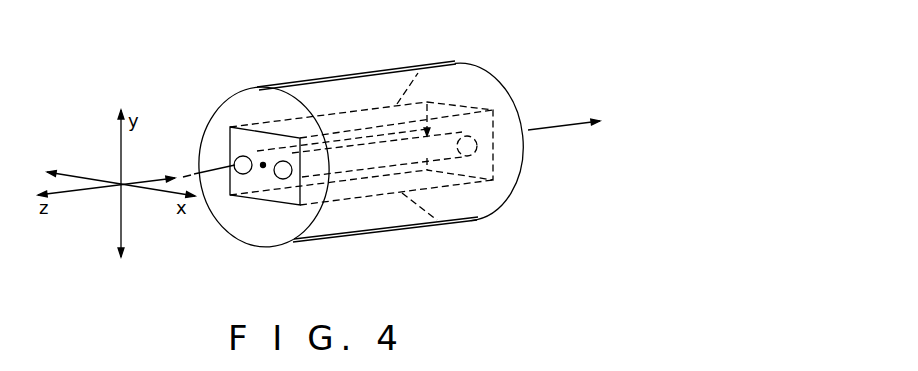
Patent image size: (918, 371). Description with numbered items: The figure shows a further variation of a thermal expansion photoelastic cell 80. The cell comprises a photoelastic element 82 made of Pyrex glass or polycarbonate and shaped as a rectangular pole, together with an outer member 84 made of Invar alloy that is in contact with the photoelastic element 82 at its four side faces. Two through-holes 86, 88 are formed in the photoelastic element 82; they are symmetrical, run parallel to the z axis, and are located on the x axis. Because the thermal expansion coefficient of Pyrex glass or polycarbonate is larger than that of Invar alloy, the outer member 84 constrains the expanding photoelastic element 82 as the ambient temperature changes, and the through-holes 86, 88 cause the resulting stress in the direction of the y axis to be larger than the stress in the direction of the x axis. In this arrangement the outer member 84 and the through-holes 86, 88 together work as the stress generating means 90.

The thermal expansion photoelastic cell 80 is at (397, 137).
The photoelastic element 82 is at (232, 199).
The outer member 84 is at (258, 105).
The through-hole 86 is at (234, 160).
The through-hole 88 is at (280, 205).
The stress generating means 90 is at (255, 235).